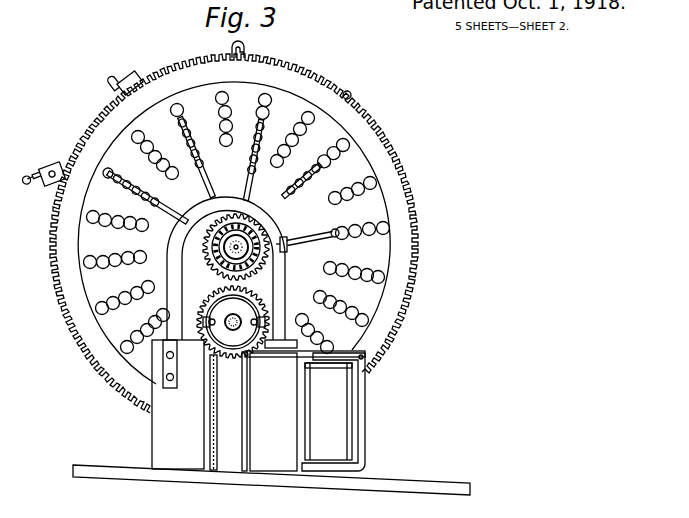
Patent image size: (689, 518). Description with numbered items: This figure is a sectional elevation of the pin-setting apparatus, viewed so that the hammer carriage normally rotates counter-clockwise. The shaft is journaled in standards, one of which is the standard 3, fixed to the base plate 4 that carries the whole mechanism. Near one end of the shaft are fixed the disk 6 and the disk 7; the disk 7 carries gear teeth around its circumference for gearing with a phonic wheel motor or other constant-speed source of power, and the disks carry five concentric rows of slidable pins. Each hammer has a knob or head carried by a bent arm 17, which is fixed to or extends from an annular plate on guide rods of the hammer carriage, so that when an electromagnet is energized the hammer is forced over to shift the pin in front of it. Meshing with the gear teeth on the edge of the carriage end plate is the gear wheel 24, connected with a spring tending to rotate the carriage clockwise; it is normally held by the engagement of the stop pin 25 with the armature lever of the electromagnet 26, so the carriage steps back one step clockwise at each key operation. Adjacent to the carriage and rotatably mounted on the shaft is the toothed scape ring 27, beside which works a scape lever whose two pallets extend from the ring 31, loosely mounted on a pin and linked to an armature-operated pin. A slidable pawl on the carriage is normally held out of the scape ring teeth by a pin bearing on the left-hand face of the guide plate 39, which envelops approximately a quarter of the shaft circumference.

The standard 3 is at (377, 183).
The base plate 4 is at (380, 479).
The disk 6 is at (398, 239).
The disk 7 is at (418, 210).
The bent arm 17 is at (206, 190).
The gear wheel 24 is at (225, 357).
The stop pin 25 is at (220, 360).
The electromagnet 26 is at (365, 405).
The scape ring 27 is at (294, 227).
The ring 31 is at (313, 231).
The guide plate 39 is at (204, 247).